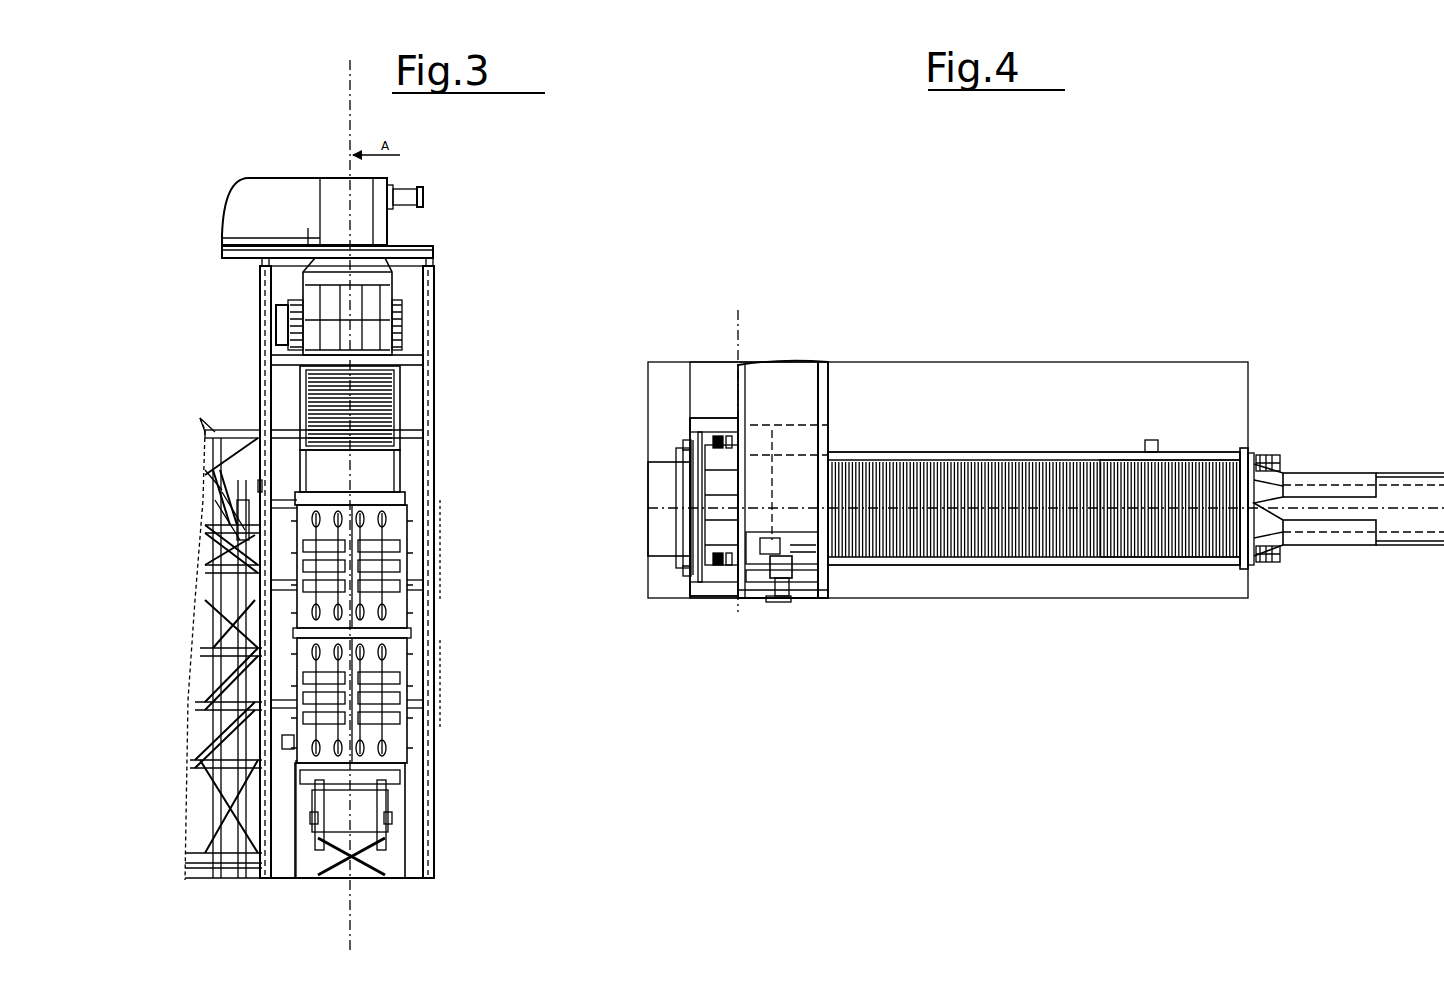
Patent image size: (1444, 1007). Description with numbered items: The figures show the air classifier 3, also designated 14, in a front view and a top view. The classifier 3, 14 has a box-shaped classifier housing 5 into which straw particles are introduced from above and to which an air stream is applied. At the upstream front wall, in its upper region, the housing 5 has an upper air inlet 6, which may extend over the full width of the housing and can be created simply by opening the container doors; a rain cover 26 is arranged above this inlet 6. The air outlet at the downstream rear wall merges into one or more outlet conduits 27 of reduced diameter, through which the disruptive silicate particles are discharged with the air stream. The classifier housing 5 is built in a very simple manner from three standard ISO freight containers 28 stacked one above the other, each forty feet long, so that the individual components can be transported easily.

In FIG. 3, the classifier 3 is at (200, 390).
In FIG. 4, the classifier 3 is at (985, 735).
In FIG. 3, the classifier 14 is at (200, 390).
In FIG. 4, the classifier 14 is at (985, 735).
In FIG. 4, the classifier housing 5 is at (1070, 440).
In FIG. 3, the upper air inlet 6 is at (362, 482).
In FIG. 3, the rain cover 26 is at (376, 418).
In FIG. 4, the outlet conduits 27 is at (1300, 470).
In FIG. 3, the standard containers 28 is at (410, 459).
In FIG. 4, the standard containers 28 is at (1112, 572).